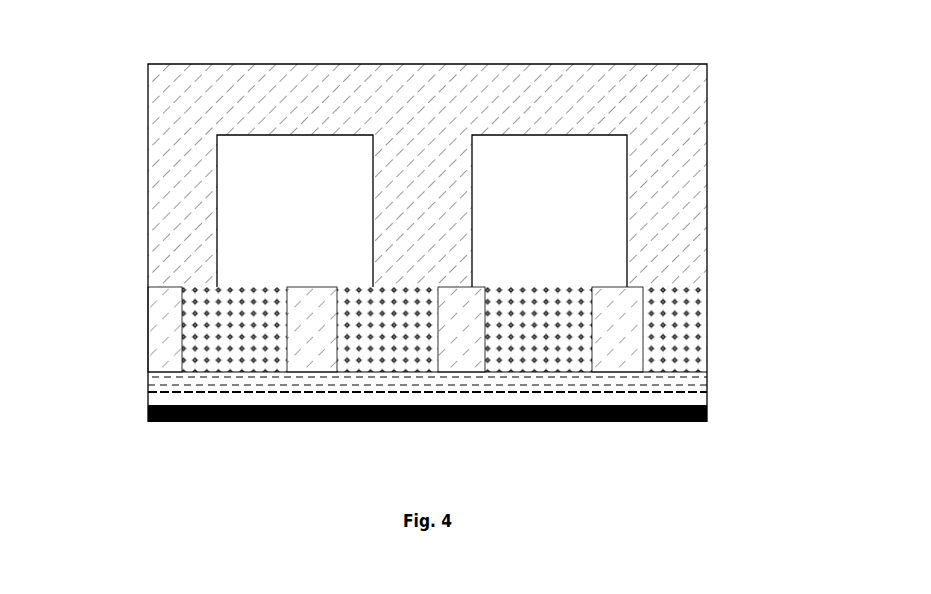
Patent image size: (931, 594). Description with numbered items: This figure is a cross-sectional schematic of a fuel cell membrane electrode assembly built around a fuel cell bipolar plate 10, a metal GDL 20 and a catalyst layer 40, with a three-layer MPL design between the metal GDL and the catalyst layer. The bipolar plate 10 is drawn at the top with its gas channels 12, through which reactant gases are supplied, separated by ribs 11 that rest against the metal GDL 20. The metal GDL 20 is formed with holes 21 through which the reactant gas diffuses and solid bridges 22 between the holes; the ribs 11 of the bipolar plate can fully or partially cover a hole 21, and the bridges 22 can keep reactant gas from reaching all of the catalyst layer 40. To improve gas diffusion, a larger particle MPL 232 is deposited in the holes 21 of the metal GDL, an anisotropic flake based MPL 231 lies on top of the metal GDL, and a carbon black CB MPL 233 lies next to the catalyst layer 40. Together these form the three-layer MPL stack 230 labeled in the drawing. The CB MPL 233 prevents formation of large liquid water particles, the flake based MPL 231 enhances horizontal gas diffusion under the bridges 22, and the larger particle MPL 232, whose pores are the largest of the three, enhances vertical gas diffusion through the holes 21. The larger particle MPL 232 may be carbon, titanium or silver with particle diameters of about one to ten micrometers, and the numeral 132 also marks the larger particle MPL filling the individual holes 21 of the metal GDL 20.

The fuel cell bipolar plate 10 is at (675, 102).
The rib 11 is at (658, 245).
The gas channel 12 is at (242, 255).
The metal GDL 20 is at (157, 328).
The catalyst layer 40 is at (150, 413).
The electrode 132 is at (203, 338).
The bridge 22 is at (308, 342).
The hole 21 is at (507, 340).
The thin film transistor layer 230 is at (489, 354).
The flake based MPL 231 is at (673, 387).
The larger particle MPL 232 is at (683, 340).
The CB MPL 233 is at (673, 400).